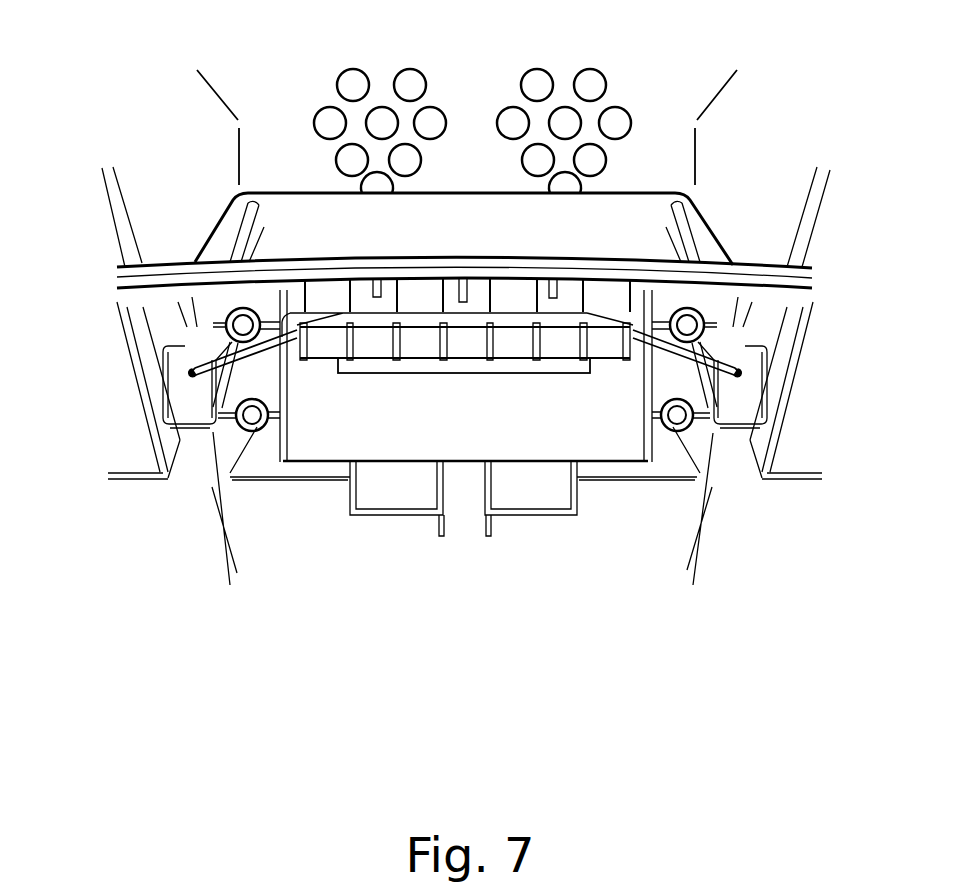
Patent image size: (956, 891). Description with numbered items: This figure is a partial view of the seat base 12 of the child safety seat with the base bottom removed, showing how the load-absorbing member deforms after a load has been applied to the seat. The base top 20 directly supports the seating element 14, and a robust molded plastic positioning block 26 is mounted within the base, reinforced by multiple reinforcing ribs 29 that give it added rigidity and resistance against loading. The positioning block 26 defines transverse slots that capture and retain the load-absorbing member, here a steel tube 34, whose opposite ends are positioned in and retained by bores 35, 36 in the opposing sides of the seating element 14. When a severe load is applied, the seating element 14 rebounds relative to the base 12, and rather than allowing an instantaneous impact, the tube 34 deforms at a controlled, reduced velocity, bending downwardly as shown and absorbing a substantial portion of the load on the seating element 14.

The seat base 12 is at (187, 489).
The seating element 14 is at (163, 327).
The base top 20 is at (643, 220).
The positioning block 26 is at (327, 290).
The reinforcing ribs 29 is at (587, 305).
The steel tube 34 is at (463, 318).
The bore 35 is at (197, 372).
The bore 36 is at (730, 373).